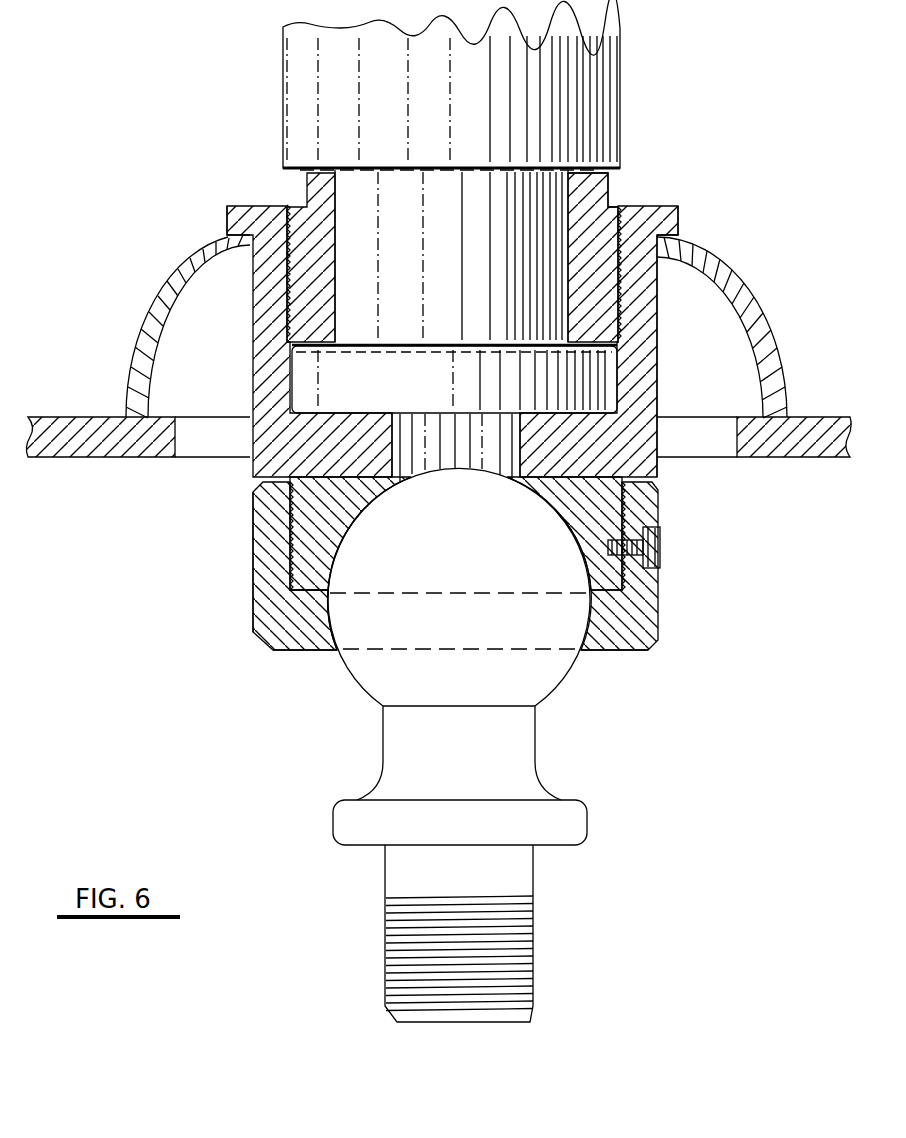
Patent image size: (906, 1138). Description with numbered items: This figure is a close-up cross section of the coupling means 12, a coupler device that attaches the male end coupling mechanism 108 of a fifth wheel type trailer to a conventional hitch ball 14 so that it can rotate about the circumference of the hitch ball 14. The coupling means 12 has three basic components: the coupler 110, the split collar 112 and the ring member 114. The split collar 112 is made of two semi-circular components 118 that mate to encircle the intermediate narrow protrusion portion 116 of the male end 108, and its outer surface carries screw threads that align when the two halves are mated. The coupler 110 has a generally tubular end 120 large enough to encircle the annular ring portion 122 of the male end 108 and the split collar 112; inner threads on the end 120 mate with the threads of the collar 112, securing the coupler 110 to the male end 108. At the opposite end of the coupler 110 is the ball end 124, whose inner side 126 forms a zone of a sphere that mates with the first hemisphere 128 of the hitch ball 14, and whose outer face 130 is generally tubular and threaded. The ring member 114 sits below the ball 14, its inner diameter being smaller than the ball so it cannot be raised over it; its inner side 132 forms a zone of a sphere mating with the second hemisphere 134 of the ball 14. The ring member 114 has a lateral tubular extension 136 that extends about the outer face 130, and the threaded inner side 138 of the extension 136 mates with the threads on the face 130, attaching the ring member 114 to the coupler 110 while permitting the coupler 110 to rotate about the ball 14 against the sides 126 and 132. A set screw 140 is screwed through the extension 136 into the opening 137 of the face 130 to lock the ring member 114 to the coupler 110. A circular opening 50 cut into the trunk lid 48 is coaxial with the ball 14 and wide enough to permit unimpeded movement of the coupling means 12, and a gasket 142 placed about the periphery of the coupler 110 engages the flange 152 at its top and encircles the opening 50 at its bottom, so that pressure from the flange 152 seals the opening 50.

The coupling means 12 is at (162, 595).
The hitch ball 14 is at (358, 680).
The trunk lid 48 is at (101, 415).
The opening 50 is at (229, 439).
The male end coupling mechanism 108 is at (620, 112).
The coupler 110 is at (660, 392).
The split collar 112 is at (605, 192).
The ring member 114 is at (265, 645).
The intermediate narrow protrusion portion 116 is at (398, 218).
The semi-circular components 118 is at (314, 290).
The tubular end 120 is at (660, 288).
The annular ring portion 122 is at (327, 380).
The ball end 124 is at (594, 509).
The inner side 126 is at (368, 510).
The first hemisphere 128 is at (452, 485).
The outer face 130 is at (290, 556).
The inner side 132 is at (330, 622).
The second hemisphere 134 is at (528, 638).
The lateral tubular extension 136 is at (254, 527).
The opening 137 is at (580, 535).
The inner side 138 is at (330, 533).
The set screw 140 is at (661, 548).
The gasket 142 is at (183, 257).
The flange 152 is at (240, 206).